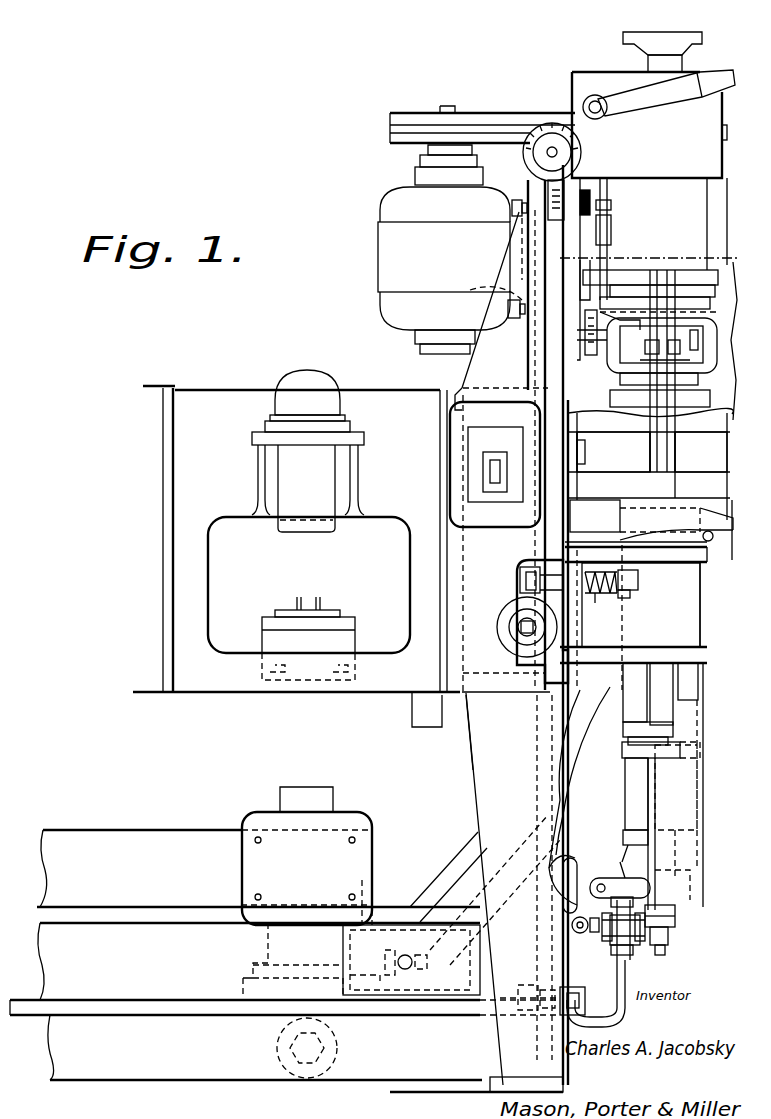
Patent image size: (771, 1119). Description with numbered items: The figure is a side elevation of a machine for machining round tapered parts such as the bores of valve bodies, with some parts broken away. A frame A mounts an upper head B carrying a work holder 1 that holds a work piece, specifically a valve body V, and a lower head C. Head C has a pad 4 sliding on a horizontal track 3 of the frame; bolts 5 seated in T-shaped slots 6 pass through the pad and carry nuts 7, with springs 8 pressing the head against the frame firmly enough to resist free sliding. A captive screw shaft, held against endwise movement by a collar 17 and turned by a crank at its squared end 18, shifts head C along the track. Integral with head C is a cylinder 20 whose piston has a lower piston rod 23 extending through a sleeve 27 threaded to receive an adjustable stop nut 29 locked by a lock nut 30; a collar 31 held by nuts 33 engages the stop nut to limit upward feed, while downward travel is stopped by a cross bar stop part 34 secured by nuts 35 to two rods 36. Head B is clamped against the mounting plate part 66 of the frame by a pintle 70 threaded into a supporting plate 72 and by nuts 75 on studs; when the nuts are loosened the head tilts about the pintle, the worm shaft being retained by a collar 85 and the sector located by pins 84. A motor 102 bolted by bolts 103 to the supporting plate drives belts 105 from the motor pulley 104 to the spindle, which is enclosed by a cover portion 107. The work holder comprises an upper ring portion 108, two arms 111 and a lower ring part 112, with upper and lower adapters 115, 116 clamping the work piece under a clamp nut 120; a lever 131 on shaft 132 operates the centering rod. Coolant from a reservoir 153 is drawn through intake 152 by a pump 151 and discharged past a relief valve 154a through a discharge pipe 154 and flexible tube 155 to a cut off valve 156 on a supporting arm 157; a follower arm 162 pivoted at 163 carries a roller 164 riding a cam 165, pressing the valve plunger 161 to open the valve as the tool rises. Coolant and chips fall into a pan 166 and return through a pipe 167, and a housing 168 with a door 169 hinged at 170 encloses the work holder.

The work holder 1 is at (712, 363).
The track 3 is at (548, 573).
The pad 4 is at (555, 602).
The bolts 5 is at (520, 567).
The T-shaped slots 6 is at (526, 582).
The nuts 7 is at (632, 575).
The springs 8 is at (597, 608).
The collar 17 is at (513, 645).
The squared end 18 is at (518, 627).
The cylinder 20 is at (685, 608).
The lower piston rod 23 is at (645, 847).
The sleeve 27 is at (628, 737).
The adjustable stop nut 29 is at (640, 800).
The lock nut 30 is at (622, 755).
The collar 31 is at (680, 876).
The nuts 33 is at (676, 912).
The cross bar stop part 34 is at (676, 925).
The nuts 35 is at (670, 942).
The rods 36 is at (665, 952).
The mounting plate part 66 is at (545, 368).
The pintle 70 is at (545, 395).
The supporting plate 72 is at (532, 187).
The nuts 75 is at (588, 190).
The pins 84 is at (557, 152).
The collar 85 is at (573, 142).
The motor 102 is at (444, 270).
The bolts 103 is at (510, 207).
The motor pulley 104 is at (410, 113).
The belts 105 is at (470, 122).
The cover portion 107 is at (575, 80).
The upper ring portion 108 is at (655, 330).
The arms 111 is at (707, 476).
The lower ring part 112 is at (722, 400).
The upper adapter 115 is at (622, 337).
The lower adapter 116 is at (652, 345).
The clamp nut 120 is at (640, 395).
The lever 131 is at (695, 90).
The shaft 132 is at (594, 100).
The motor driven pump 151 is at (262, 950).
The intake 152 is at (295, 1002).
The reservoir 153 is at (110, 923).
The discharge pipe 154 is at (562, 935).
The relief valve 154a is at (398, 1000).
The flexible tube 155 is at (622, 1012).
The cut off valve 156 is at (632, 948).
The supporting arm 157 is at (622, 876).
The valve plunger 161 is at (592, 936).
The follower arm 162 is at (572, 868).
The pivot 163 is at (620, 888).
The roller 164 is at (577, 908).
The cam 165 is at (570, 905).
The pan 166 is at (651, 520).
The pipe 167 is at (598, 700).
The housing 168 is at (636, 250).
The door 169 is at (690, 262).
The hinge 170 is at (650, 272).
The frame A is at (465, 751).
The head B is at (616, 244).
The head C is at (700, 580).
The valve body V is at (692, 343).